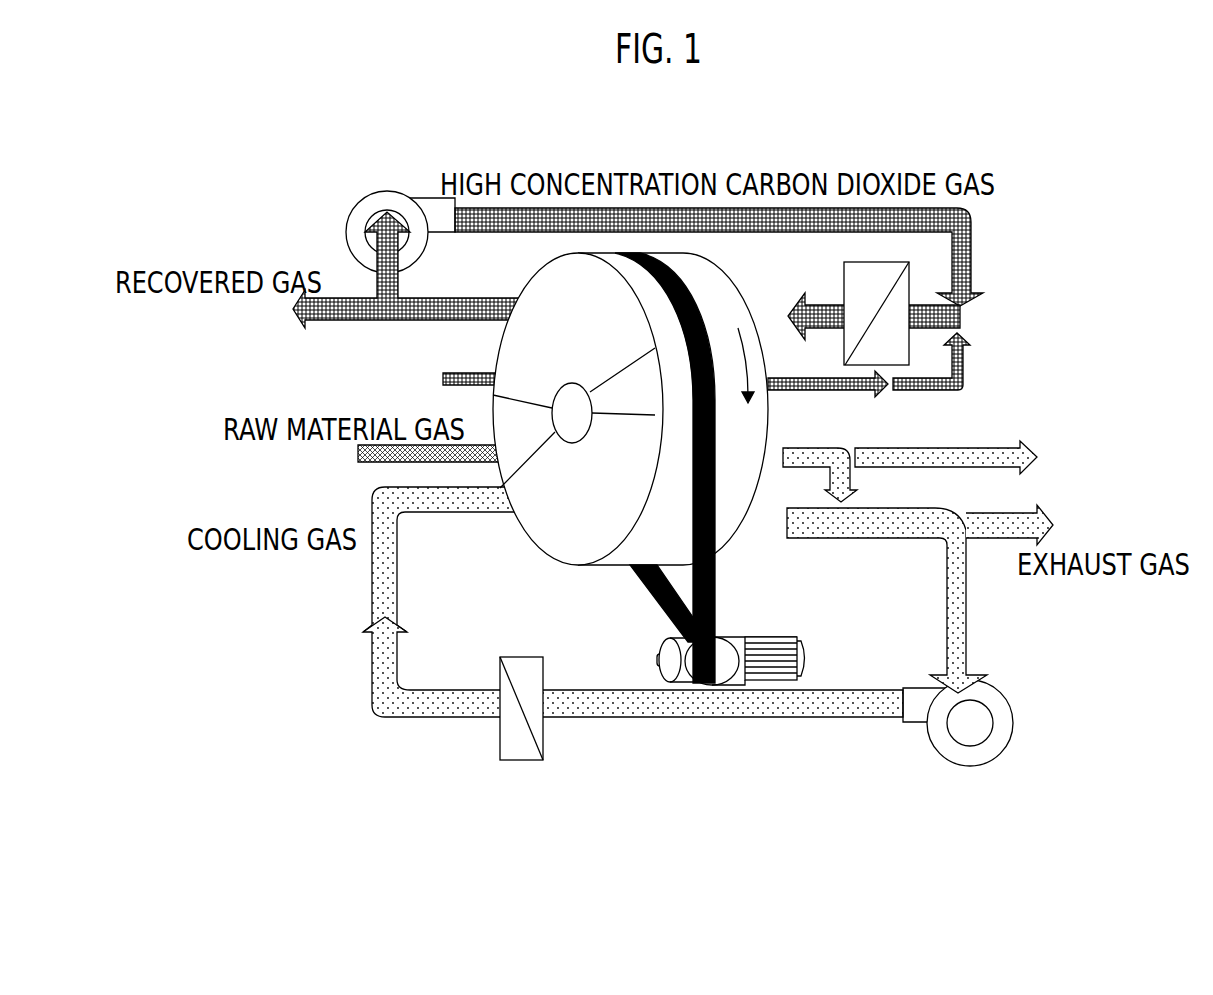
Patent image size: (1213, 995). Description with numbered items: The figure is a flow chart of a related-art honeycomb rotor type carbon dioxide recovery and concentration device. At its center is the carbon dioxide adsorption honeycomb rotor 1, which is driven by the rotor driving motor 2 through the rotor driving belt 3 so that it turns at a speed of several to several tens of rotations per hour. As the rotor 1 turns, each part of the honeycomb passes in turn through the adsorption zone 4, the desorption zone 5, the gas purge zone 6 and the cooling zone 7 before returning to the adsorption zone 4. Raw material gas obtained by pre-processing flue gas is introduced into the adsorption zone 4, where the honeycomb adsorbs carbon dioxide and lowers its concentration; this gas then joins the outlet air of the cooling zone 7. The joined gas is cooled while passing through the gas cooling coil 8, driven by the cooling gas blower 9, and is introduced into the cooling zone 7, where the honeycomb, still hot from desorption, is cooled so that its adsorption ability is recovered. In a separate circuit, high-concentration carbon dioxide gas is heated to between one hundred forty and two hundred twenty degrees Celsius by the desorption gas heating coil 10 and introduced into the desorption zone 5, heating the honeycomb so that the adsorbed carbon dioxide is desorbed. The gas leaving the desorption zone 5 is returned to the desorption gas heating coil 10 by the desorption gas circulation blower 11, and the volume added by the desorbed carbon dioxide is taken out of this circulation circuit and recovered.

The carbon dioxide adsorption honeycomb rotor 1 is at (649, 407).
The rotor driving motor 2 is at (798, 667).
The rotor driving belt 3 is at (715, 572).
The adsorption zone 4 is at (515, 412).
The desorption zone 5 is at (562, 292).
The gas purge zone 6 is at (637, 393).
The cooling zone 7 is at (590, 522).
The gas cooling coil 8 is at (517, 655).
The cooling gas blower 9 is at (988, 688).
The desorption gas heating coil 10 is at (843, 292).
The desorption gas circulation blower 11 is at (346, 236).